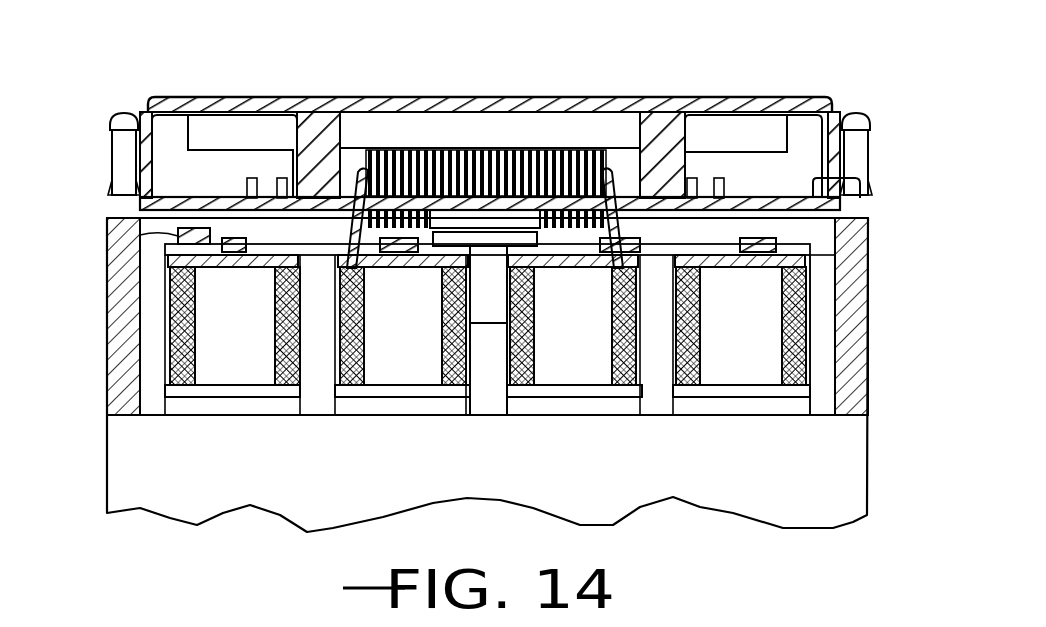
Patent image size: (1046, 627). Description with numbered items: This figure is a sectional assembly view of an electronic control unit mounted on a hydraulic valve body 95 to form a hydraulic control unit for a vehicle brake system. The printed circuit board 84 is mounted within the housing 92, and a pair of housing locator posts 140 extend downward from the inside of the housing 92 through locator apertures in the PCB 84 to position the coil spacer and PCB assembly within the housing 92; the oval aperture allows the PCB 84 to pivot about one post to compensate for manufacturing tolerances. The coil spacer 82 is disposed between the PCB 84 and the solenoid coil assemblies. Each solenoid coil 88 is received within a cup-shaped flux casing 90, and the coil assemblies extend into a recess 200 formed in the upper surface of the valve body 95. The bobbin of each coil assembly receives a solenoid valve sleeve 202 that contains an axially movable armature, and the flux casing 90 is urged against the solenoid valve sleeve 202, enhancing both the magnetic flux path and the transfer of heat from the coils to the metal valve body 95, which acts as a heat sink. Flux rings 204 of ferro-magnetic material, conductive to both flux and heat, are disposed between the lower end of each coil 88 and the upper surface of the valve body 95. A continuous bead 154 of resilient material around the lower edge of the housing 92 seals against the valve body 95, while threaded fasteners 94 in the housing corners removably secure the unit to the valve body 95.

The housing 92 is at (488, 97).
The threaded fasteners 94 is at (122, 112).
The housing locator posts 140 is at (326, 126).
The printed circuit board 84 is at (750, 200).
The continuous bead 154 is at (855, 210).
The coil spacer 82 is at (176, 238).
The recess 200 is at (812, 250).
The solenoid valve sleeve 202 is at (729, 361).
The solenoid coil 88 is at (668, 378).
The flux rings 204 is at (738, 400).
The flux casing 90 is at (818, 410).
The hydraulic valve body 95 is at (498, 471).